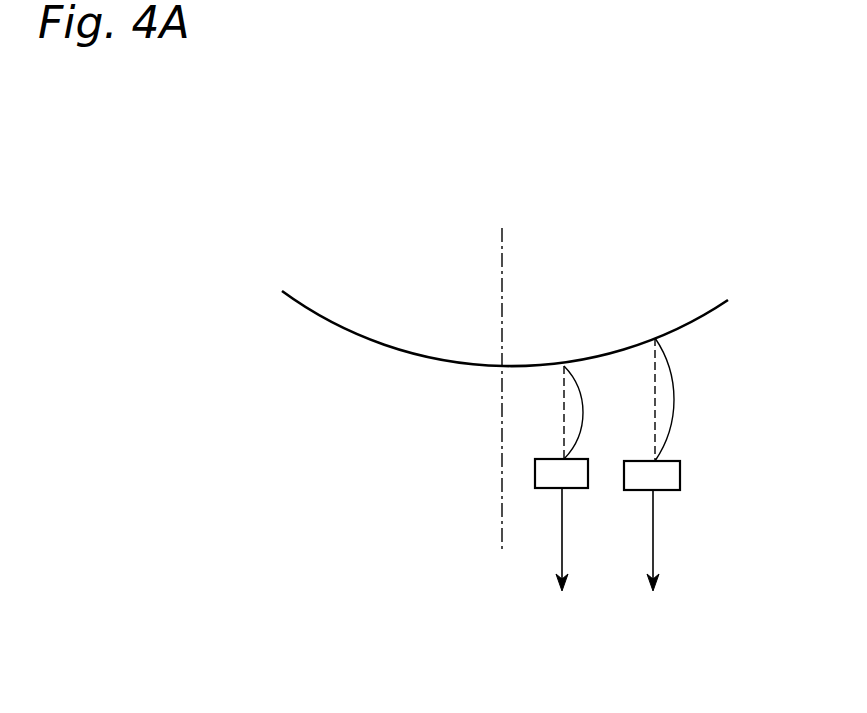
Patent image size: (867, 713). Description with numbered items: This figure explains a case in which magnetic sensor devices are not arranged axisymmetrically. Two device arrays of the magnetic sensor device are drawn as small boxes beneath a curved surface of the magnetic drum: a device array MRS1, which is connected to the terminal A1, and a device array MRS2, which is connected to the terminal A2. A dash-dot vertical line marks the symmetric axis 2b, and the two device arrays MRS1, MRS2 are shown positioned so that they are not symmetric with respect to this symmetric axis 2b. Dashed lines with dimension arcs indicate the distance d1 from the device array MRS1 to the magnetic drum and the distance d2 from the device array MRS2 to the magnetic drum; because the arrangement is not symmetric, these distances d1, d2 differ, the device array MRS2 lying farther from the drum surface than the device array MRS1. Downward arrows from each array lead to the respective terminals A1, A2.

The symmetric axis 2b is at (502, 403).
The device array MRS1 is at (535, 477).
The device array MRS2 is at (680, 482).
The distance d1 is at (596, 412).
The distance d2 is at (688, 399).
The terminal A1 is at (563, 561).
The terminal A2 is at (651, 562).